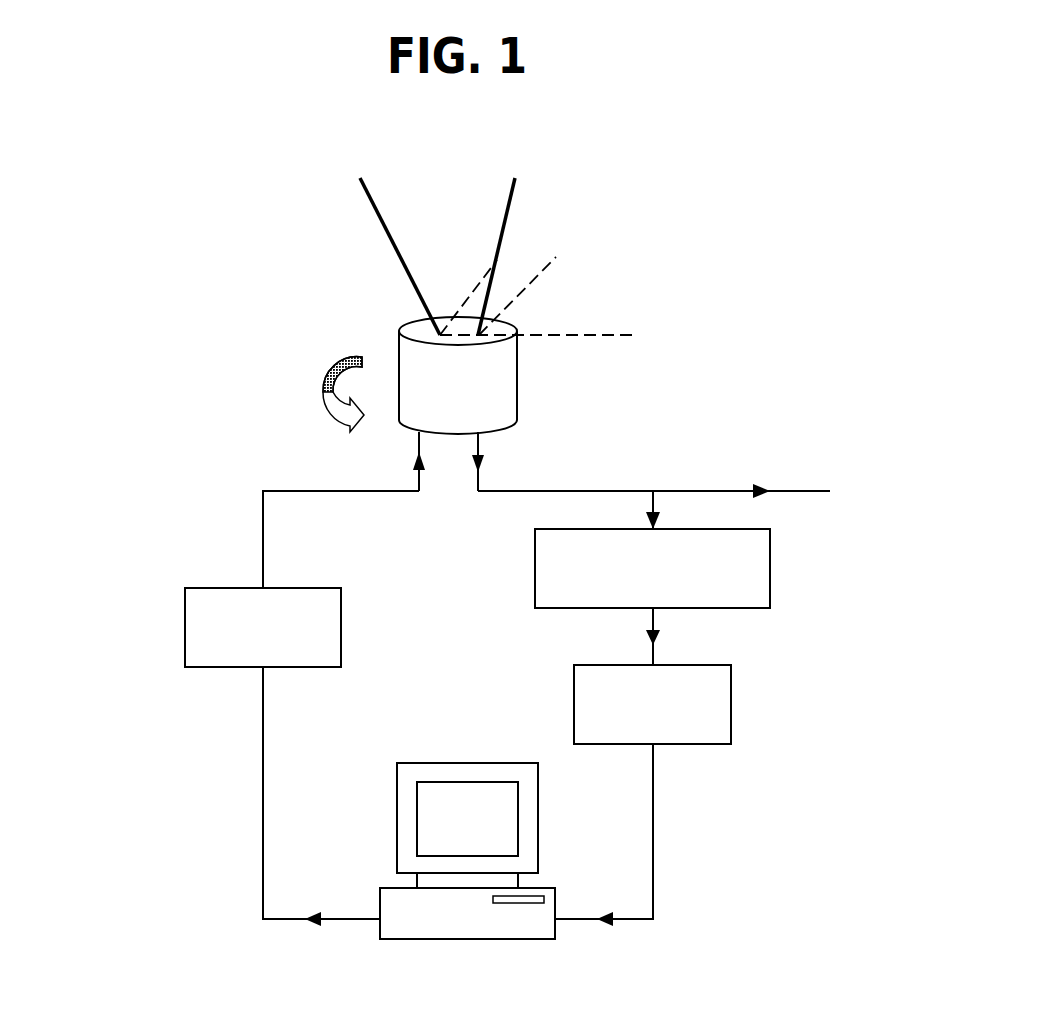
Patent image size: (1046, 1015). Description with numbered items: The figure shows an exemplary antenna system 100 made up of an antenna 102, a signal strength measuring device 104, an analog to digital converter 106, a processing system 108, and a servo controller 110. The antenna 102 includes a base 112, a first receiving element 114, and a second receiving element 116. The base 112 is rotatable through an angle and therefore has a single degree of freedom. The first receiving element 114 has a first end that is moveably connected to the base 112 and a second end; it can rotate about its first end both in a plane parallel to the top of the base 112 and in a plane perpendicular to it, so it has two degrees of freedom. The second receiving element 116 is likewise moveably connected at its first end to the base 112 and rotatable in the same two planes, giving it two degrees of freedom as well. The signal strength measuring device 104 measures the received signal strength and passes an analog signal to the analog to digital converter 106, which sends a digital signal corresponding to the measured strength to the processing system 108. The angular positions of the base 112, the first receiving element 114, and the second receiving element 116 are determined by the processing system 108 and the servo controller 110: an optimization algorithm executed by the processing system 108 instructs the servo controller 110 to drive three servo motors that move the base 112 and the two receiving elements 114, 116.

The antenna system 100 is at (155, 327).
The antenna 102 is at (399, 355).
The signal strength measuring device 104 is at (770, 568).
The analog to digital converter 106 is at (731, 706).
The processing system 108 is at (477, 939).
The servo controller 110 is at (185, 626).
The base 112 is at (518, 375).
The first receiving element 114 is at (515, 197).
The second receiving element 116 is at (398, 257).